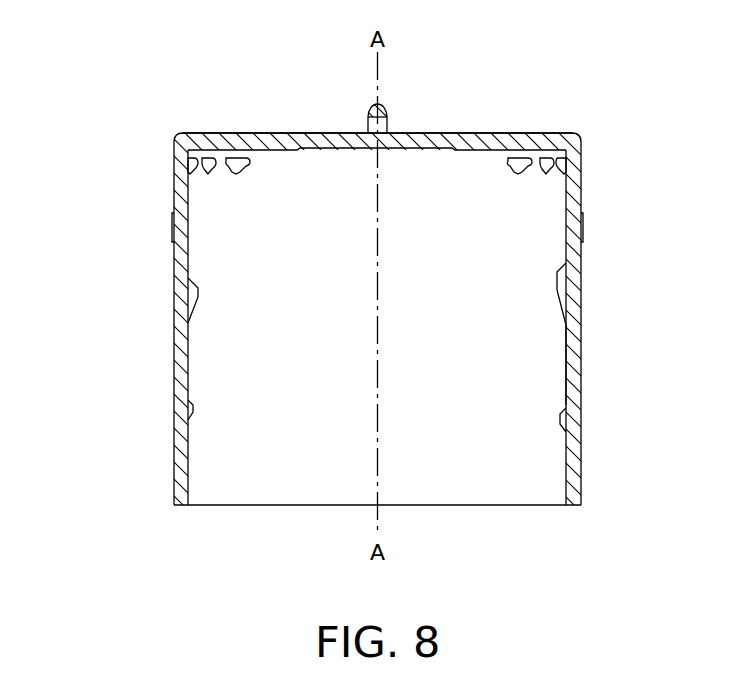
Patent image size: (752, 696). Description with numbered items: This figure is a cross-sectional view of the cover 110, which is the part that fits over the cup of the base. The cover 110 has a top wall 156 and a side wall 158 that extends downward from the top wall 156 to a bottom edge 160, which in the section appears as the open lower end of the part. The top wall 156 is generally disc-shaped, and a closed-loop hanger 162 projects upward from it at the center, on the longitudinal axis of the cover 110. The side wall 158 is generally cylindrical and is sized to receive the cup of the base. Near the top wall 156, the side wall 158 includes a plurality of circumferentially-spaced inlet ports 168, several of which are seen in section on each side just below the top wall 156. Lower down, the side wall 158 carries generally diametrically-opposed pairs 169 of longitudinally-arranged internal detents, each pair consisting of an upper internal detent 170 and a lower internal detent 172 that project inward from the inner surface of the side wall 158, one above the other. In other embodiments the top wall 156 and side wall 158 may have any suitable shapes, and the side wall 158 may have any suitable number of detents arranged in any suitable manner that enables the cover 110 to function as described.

The cover 110 is at (128, 88).
The top wall 156 is at (478, 133).
The side wall 158 is at (582, 363).
The bottom edge 160 is at (575, 506).
The closed-loop hanger 162 is at (372, 108).
The inlet ports 168 is at (175, 163).
The pairs of longitudinally-arranged internal detents 169 is at (555, 335).
The upper internal detent 170 is at (559, 292).
The lower internal detent 172 is at (566, 416).